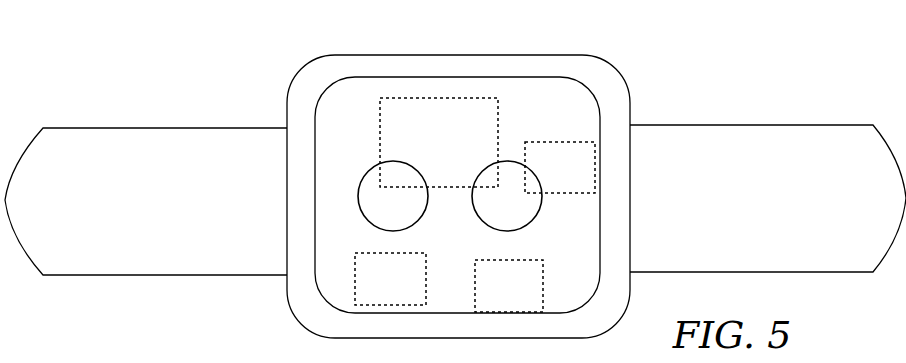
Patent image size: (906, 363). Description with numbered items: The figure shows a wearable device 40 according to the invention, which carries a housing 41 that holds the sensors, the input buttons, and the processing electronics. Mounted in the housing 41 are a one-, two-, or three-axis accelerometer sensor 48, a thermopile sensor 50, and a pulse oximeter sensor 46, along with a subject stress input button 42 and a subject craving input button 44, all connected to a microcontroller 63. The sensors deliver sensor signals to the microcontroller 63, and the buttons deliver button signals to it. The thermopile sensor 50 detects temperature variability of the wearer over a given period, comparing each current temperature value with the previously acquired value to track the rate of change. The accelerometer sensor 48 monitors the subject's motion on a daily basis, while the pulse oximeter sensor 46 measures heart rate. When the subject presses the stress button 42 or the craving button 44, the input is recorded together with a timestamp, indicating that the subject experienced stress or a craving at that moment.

The wearable electronic device 40 is at (232, 68).
The housing / case 41 is at (594, 90).
The first optical sensor 42 is at (382, 216).
The second optical sensor 44 is at (496, 216).
The component module 46 is at (561, 172).
The component module 48 is at (381, 293).
The component module 50 is at (498, 297).
The component module 63 is at (427, 137).